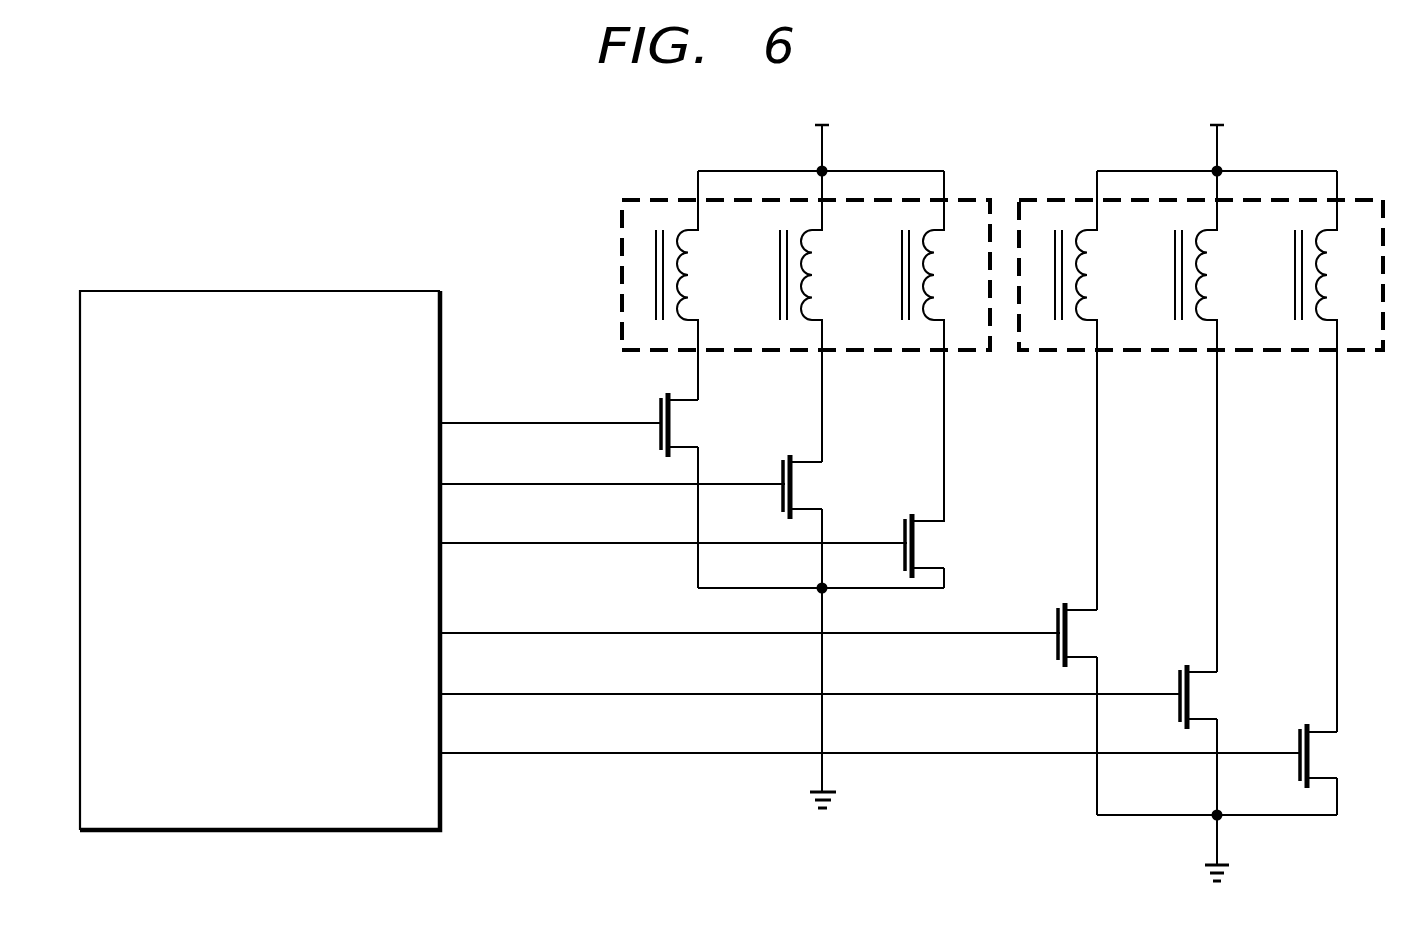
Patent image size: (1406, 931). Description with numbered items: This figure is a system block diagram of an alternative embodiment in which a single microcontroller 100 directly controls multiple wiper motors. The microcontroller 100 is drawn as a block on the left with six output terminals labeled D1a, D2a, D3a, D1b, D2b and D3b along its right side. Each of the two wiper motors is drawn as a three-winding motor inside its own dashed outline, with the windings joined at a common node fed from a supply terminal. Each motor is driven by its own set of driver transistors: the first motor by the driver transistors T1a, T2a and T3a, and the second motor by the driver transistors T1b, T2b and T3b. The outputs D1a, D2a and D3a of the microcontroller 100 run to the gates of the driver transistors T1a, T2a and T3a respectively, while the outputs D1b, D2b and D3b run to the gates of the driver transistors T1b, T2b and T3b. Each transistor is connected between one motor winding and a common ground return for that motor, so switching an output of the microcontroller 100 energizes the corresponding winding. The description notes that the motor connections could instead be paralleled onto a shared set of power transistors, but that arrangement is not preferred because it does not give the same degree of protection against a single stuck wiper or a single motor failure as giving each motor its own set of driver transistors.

The microcontroller 100 is at (228, 383).
The driver transistor T1a is at (699, 490).
The driver transistor T2a is at (821, 623).
The driver transistor T3a is at (944, 551).
The driver transistor T1b is at (1096, 709).
The driver transistor T2b is at (1217, 765).
The driver transistor T3b is at (1338, 769).
The drive output D1a is at (522, 424).
The drive output D2a is at (584, 483).
The drive output D3a is at (645, 544).
The drive output D1b is at (721, 634).
The drive output D2b is at (781, 694).
The drive output D3b is at (841, 754).